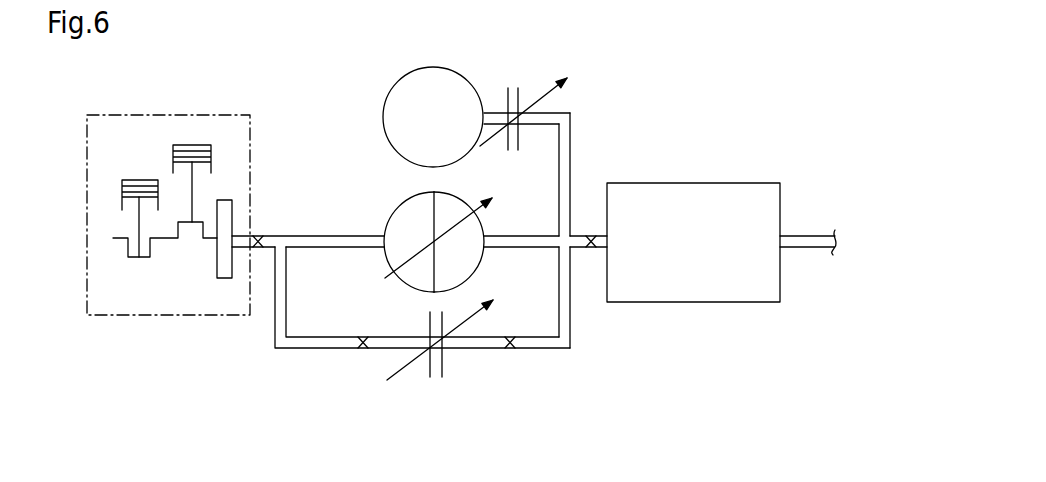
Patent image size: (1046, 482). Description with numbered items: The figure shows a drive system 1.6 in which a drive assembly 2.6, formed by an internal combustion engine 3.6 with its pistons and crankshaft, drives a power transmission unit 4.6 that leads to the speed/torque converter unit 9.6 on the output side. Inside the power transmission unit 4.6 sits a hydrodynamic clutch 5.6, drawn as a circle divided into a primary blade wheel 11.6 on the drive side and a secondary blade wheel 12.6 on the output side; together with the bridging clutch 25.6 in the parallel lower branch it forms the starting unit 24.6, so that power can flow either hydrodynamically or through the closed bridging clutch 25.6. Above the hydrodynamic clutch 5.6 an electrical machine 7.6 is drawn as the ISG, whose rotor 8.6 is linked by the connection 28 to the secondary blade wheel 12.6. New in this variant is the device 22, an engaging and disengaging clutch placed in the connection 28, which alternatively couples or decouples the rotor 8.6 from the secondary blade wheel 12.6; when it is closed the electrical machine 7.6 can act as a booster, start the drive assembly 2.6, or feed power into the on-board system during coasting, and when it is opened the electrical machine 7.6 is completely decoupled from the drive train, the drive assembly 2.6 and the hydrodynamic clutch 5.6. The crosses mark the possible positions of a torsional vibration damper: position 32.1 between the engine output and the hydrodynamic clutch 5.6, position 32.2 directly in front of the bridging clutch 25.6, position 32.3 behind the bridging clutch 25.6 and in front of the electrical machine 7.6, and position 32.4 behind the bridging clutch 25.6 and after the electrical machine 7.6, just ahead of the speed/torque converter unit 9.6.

The drive system 1.6 is at (621, 113).
The drive assembly 2.6 is at (168, 182).
The internal combustion engine 3.6 is at (140, 127).
The power transmission unit 4.6 is at (407, 199).
The hydrodynamic clutch 5.6 is at (407, 199).
The electrical machine 7.6 is at (412, 83).
The rotor of the electrical machine 8.6 is at (423, 93).
The speed/torque converter unit 9.6 is at (705, 254).
The primary blade wheel 11.6 is at (413, 277).
The secondary blade wheel 12.6 is at (458, 260).
The device for the alternative coupling or decoupling of the rotor of the electrical 22 is at (516, 80).
The starting unit 24.6 is at (383, 218).
The bridging clutch 25.6 is at (436, 379).
The connection between the electrical machine and the secondary blade wheel 28 is at (547, 223).
The torsional vibration damper 32.1 is at (262, 249).
The torsional vibration damper 32.2 is at (363, 353).
The torsional vibration damper 32.3 is at (510, 353).
The torsional vibration damper 32.4 is at (590, 250).